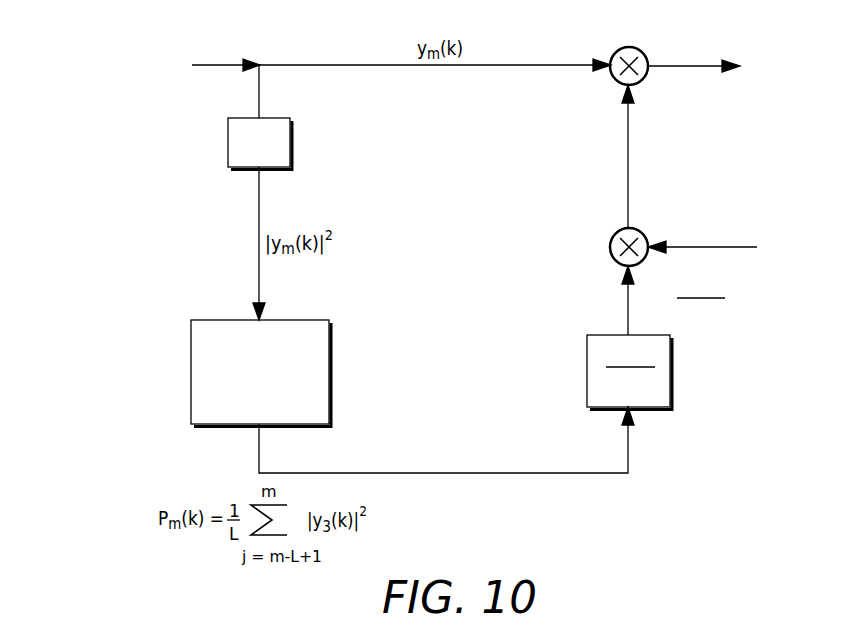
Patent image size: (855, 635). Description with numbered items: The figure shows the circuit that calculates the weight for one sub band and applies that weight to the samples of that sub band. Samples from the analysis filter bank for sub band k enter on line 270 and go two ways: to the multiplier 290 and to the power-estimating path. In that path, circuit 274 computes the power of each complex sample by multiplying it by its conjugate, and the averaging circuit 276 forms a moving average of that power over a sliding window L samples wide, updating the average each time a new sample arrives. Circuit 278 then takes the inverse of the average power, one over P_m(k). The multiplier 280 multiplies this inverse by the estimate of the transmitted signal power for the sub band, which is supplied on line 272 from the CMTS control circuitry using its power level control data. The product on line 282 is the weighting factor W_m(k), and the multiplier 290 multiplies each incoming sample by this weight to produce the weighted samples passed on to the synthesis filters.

The line 270 is at (222, 64).
The line 272 is at (740, 248).
The circuit 274 is at (243, 118).
The averaging circuit 276 is at (207, 320).
The circuit 278 is at (601, 335).
The multiplier 280 is at (637, 230).
The line 282 is at (628, 156).
The multiplier 290 is at (637, 48).